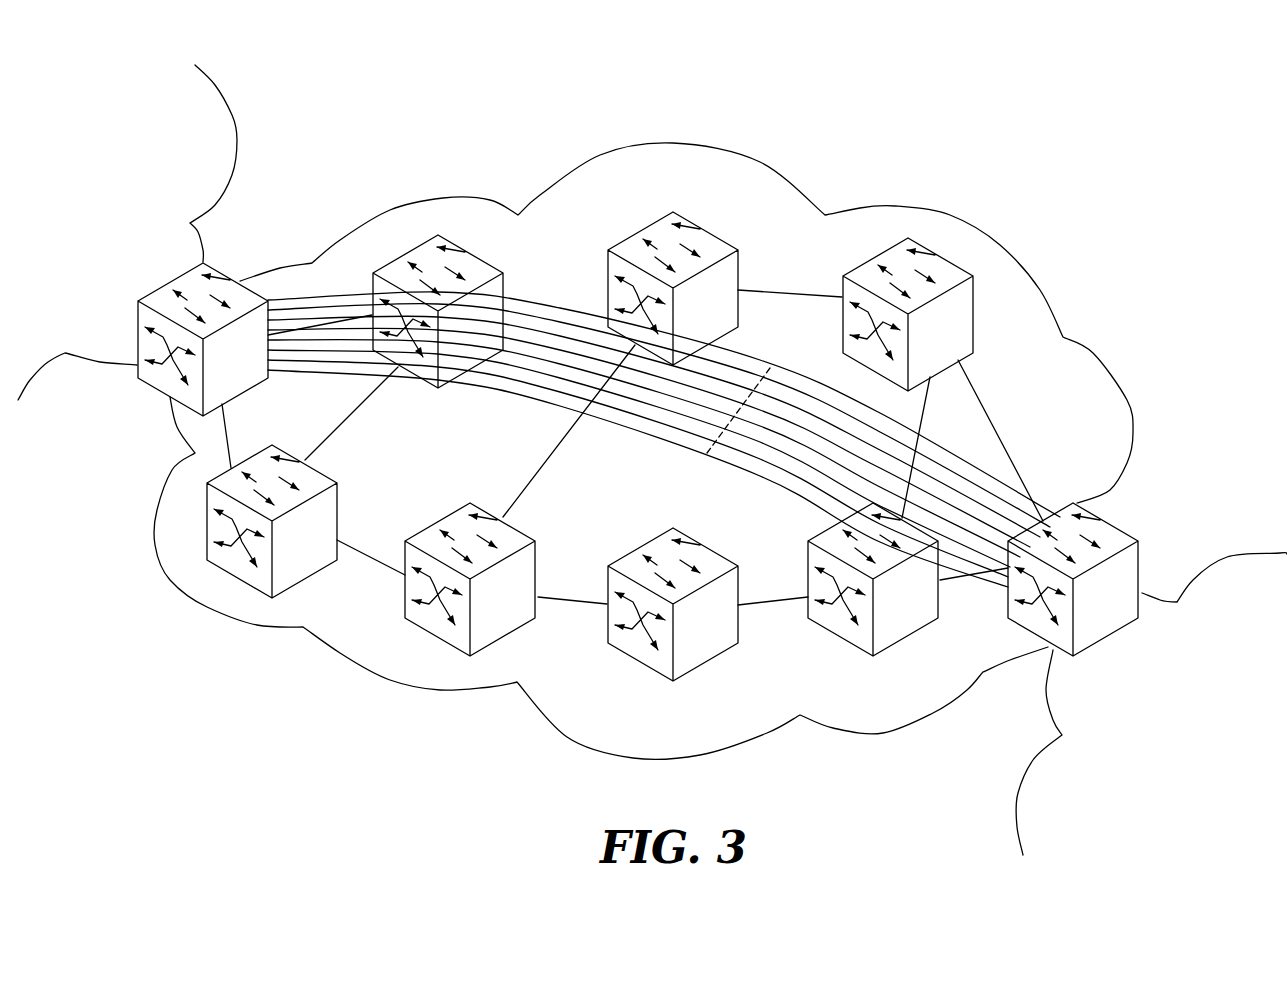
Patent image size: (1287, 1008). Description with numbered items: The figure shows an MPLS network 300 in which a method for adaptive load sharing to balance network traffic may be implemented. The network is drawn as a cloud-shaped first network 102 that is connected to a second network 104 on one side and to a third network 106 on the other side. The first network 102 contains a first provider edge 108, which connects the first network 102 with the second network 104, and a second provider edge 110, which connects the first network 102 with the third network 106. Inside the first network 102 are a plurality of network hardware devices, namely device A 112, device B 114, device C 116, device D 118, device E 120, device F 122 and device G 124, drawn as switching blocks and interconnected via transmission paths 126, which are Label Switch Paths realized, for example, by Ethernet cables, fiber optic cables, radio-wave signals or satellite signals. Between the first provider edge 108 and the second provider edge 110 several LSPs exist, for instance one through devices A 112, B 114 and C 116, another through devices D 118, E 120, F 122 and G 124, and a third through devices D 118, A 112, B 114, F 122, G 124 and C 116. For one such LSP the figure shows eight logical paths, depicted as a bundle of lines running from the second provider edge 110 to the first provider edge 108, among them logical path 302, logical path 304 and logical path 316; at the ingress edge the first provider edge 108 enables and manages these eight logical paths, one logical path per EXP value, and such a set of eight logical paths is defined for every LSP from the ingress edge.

The MPLS network 300 is at (1130, 147).
The first network 102 is at (692, 145).
The second network 104 is at (1015, 810).
The third network 106 is at (238, 140).
The first provider edge (PE1) 108 is at (1123, 617).
The second provider edge (PE2) 110 is at (253, 380).
The network hardware device A 112 is at (968, 317).
The network hardware device B 114 is at (712, 242).
The network hardware device C 116 is at (473, 268).
The network hardware device D 118 is at (923, 618).
The network hardware device E 120 is at (723, 643).
The network hardware device F 122 is at (522, 618).
The network hardware device G 124 is at (320, 562).
The transmission path 126 is at (1005, 448).
The logical path 302 is at (752, 362).
The logical path 304 is at (795, 395).
The logical path 316 is at (668, 442).